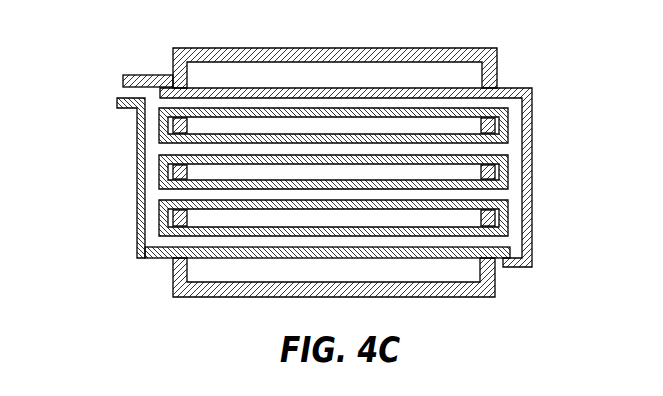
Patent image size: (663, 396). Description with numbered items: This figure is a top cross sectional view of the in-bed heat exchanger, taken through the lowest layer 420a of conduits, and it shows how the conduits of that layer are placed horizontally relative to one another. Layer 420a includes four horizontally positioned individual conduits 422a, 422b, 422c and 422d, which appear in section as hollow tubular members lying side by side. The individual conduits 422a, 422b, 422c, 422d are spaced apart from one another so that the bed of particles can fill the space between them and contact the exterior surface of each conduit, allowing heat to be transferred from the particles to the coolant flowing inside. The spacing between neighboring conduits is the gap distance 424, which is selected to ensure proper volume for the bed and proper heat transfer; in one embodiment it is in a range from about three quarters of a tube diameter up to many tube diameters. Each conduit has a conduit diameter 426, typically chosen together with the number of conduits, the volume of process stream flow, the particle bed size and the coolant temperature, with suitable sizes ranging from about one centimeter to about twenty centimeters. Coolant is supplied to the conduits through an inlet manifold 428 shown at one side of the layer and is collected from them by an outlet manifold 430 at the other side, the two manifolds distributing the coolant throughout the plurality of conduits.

The layer of conduits 420a is at (372, 253).
The individual conduit 422a is at (168, 241).
The individual conduit 422b is at (168, 196).
The individual conduit 422c is at (168, 147).
The individual conduit 422d is at (167, 105).
The gap distance 424 is at (257, 125).
The conduit diameter 426 is at (452, 102).
The inlet manifold 428 is at (152, 165).
The outlet manifold 430 is at (517, 174).